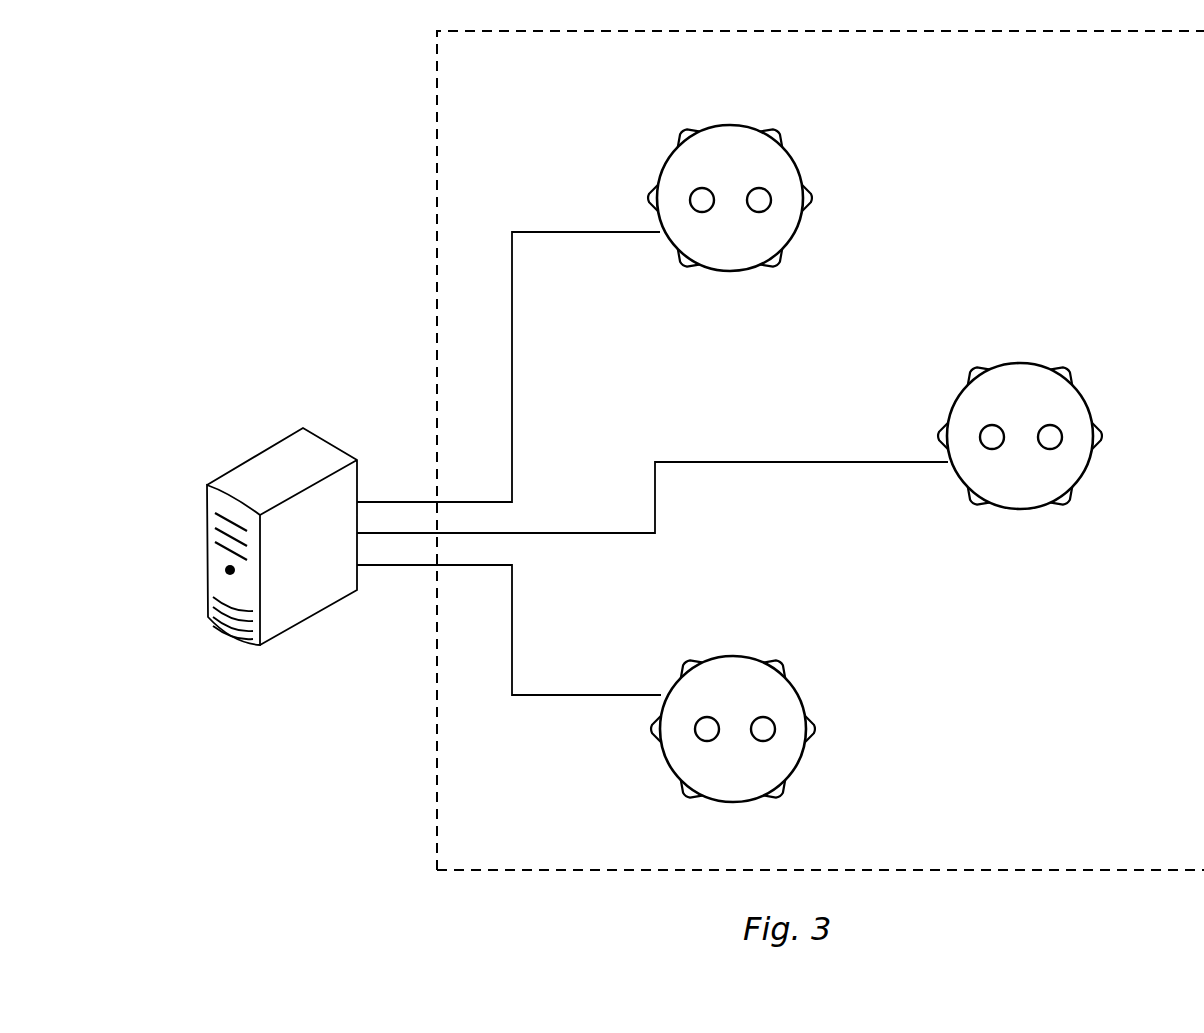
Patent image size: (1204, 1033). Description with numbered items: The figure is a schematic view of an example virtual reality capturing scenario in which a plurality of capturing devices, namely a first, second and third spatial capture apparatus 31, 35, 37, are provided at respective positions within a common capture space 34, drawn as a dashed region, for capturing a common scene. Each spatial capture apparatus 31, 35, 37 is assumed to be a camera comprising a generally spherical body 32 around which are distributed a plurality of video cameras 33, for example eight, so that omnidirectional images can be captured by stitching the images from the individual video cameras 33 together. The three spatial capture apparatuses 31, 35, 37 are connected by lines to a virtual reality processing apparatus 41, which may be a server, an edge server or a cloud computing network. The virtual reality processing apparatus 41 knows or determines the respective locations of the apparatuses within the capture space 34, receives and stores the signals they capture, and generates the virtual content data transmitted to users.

The spatial capture apparatus 31 is at (715, 195).
The spherical body 32 is at (721, 168).
The video camera 33 is at (740, 167).
The capture space 34 is at (436, 157).
The spatial capture apparatus 35 is at (949, 401).
The spatial capture apparatus 37 is at (674, 682).
The virtual reality processing apparatus 41 is at (285, 438).